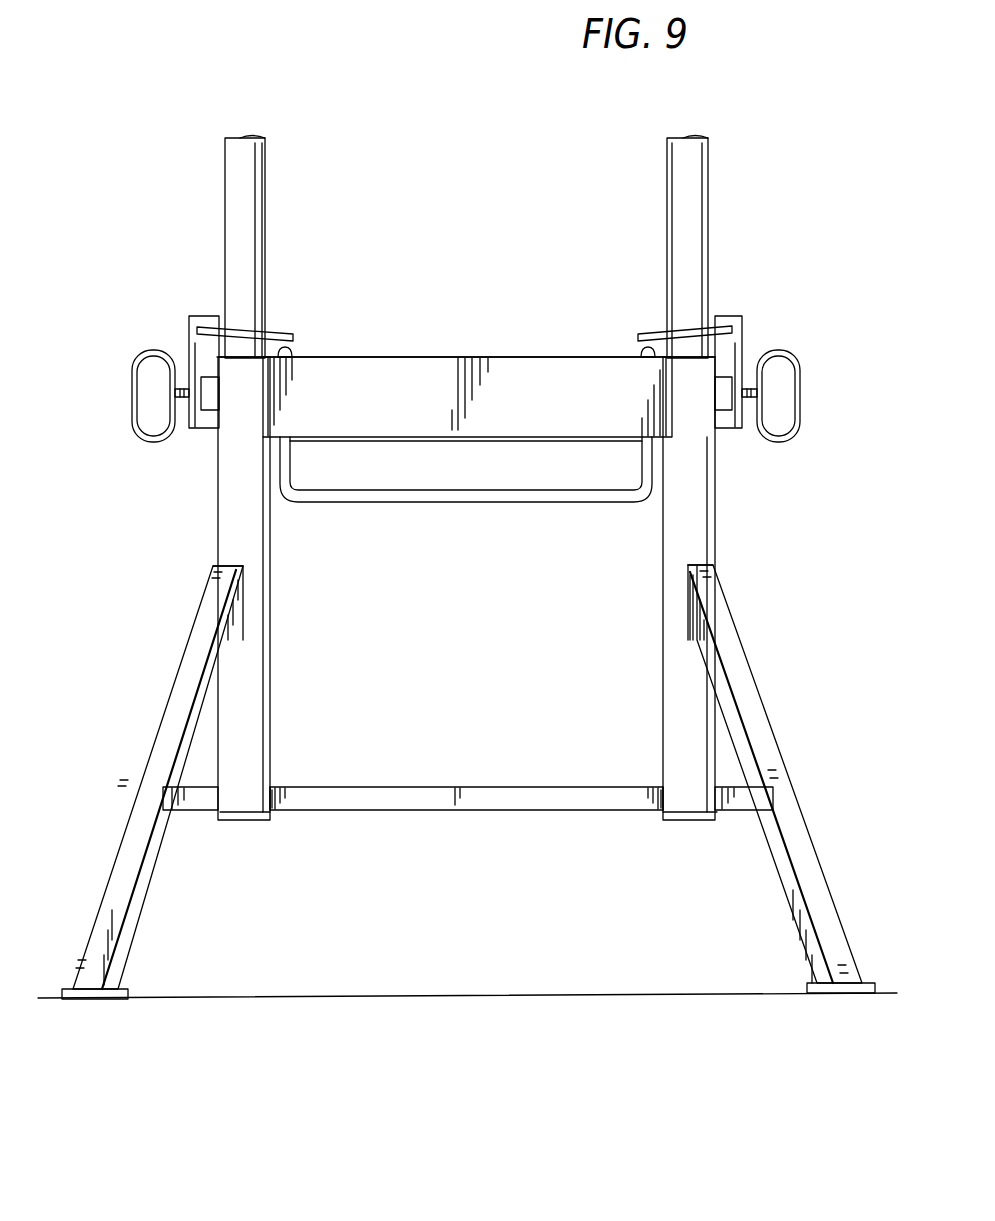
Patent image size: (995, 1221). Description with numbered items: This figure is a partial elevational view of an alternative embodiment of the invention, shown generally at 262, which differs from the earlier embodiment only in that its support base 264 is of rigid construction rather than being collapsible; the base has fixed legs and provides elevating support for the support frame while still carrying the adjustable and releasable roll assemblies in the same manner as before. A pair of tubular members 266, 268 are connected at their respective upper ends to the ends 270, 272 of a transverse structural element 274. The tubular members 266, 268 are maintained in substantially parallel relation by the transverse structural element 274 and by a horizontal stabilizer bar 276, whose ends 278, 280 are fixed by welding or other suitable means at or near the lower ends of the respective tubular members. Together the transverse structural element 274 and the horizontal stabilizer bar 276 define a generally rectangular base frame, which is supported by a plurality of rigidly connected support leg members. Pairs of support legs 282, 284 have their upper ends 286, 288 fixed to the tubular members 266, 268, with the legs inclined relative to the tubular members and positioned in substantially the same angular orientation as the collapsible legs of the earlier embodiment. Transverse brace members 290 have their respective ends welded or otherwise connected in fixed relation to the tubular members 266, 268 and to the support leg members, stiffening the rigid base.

The alternative embodiment 262 is at (735, 292).
The support base 264 is at (762, 518).
The tubular member 266 is at (268, 661).
The tubular member 268 is at (665, 657).
The end of transverse structural element 270 is at (262, 428).
The end of transverse structural element 272 is at (672, 425).
The transverse structural element 274 is at (527, 368).
The horizontal stabilizer bar 276 is at (440, 805).
The end of horizontal stabilizer bar 278 is at (272, 787).
The end of horizontal stabilizer bar 280 is at (660, 783).
The support leg 282 is at (177, 713).
The support leg 284 is at (757, 722).
The upper end of support leg 286 is at (217, 565).
The upper end of support leg 288 is at (717, 565).
The transverse brace member 290 is at (737, 802).